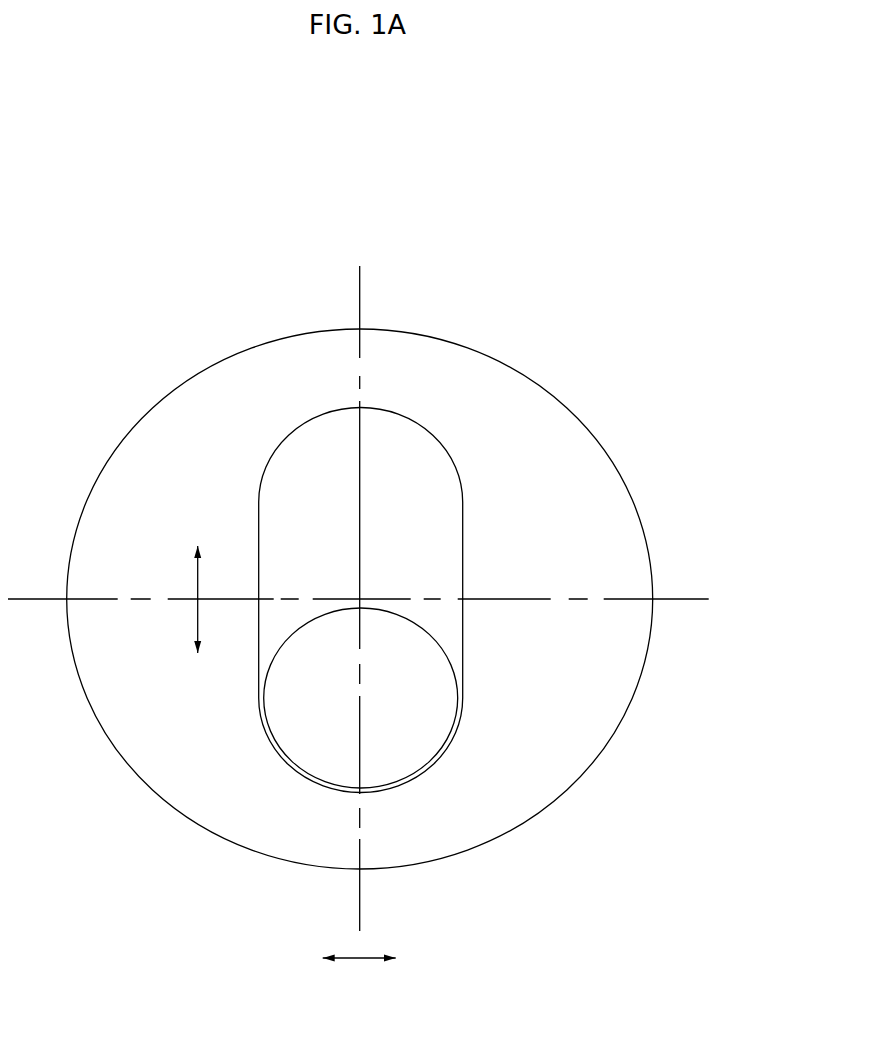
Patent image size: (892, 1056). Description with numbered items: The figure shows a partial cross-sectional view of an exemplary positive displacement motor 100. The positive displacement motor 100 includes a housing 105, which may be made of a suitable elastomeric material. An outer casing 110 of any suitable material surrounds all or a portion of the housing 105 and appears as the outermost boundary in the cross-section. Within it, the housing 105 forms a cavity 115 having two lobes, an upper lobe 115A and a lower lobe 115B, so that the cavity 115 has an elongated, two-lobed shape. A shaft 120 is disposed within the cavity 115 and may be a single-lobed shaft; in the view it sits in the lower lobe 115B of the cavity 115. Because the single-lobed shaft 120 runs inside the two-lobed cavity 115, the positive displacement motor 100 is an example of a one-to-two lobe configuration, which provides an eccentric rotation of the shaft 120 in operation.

The positive displacement motor 100 is at (513, 203).
The housing 105 is at (428, 383).
The outer casing 110 is at (632, 489).
The cavity 115 is at (264, 531).
The lobe 115A is at (338, 407).
The lobe 115B is at (305, 780).
The shaft 120 is at (458, 711).